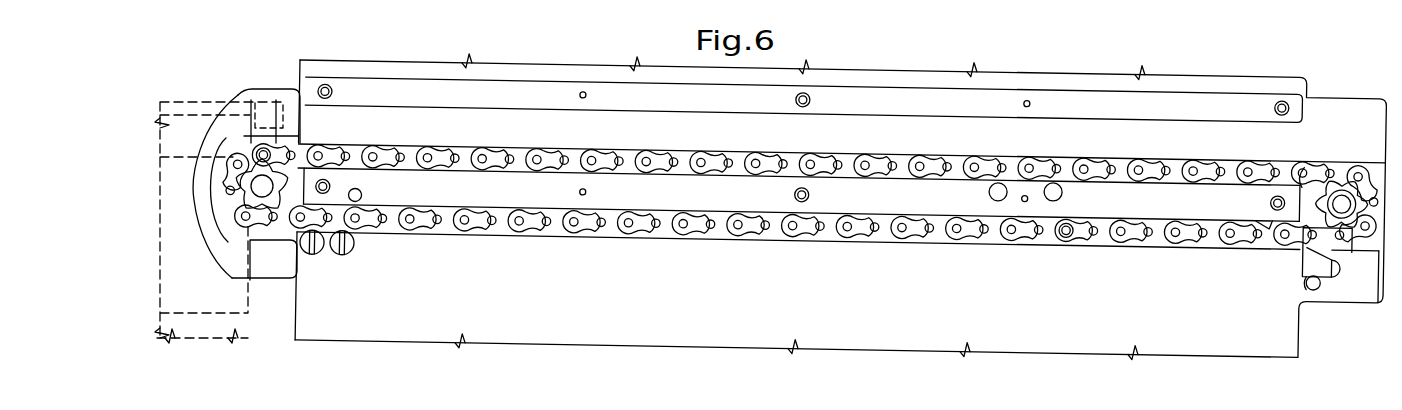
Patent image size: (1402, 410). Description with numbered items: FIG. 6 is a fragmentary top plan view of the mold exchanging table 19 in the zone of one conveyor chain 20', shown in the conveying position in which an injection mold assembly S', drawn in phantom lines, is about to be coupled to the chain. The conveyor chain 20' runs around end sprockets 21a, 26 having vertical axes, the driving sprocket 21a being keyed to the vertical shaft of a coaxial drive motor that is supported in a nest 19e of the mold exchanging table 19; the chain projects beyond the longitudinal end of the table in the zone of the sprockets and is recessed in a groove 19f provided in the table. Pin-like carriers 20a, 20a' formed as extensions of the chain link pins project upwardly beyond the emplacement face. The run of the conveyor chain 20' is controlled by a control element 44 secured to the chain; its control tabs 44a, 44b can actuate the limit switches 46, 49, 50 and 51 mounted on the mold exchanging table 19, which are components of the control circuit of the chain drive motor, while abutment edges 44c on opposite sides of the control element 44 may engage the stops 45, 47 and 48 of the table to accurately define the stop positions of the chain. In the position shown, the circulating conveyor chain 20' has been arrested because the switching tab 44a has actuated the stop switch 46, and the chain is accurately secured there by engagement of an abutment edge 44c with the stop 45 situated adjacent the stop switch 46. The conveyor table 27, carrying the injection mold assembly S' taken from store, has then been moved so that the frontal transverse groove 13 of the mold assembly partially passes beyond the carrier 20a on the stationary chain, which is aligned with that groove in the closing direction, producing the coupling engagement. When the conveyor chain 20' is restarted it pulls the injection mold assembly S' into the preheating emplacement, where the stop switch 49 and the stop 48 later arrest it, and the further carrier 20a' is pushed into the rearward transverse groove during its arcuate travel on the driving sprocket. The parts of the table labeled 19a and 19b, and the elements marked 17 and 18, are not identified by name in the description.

The mold exchanging table 19 is at (880, 360).
The lower chain guide rail 19a is at (1172, 207).
The upper plate of frame 19b is at (1225, 113).
The nest 19e is at (260, 255).
The groove 19f is at (1027, 243).
The transverse groove 13 is at (265, 118).
The conveyor chain 20' is at (800, 225).
The carrier 20a is at (238, 108).
The carrier 20a' is at (1058, 278).
The driving sprocket 21a is at (275, 230).
The end sprocket 26 is at (1328, 187).
The conveyor table 27 is at (190, 107).
The injection mold assembly S' is at (219, 195).
The control element 44 is at (1292, 268).
The switching tab 44a is at (1308, 283).
The switching tab 44b is at (1302, 168).
The abutment edge 44c is at (1272, 225).
The stop 45 is at (1337, 278).
The stop switch 46 is at (1315, 290).
The stop 47 is at (350, 255).
The stop 48 is at (320, 257).
The stop switch 49 is at (361, 195).
The limit switch 50 is at (995, 186).
The limit switch 51 is at (1057, 187).
The drive unit 17 is at (390, 402).
The guide bar 18 is at (1015, 402).